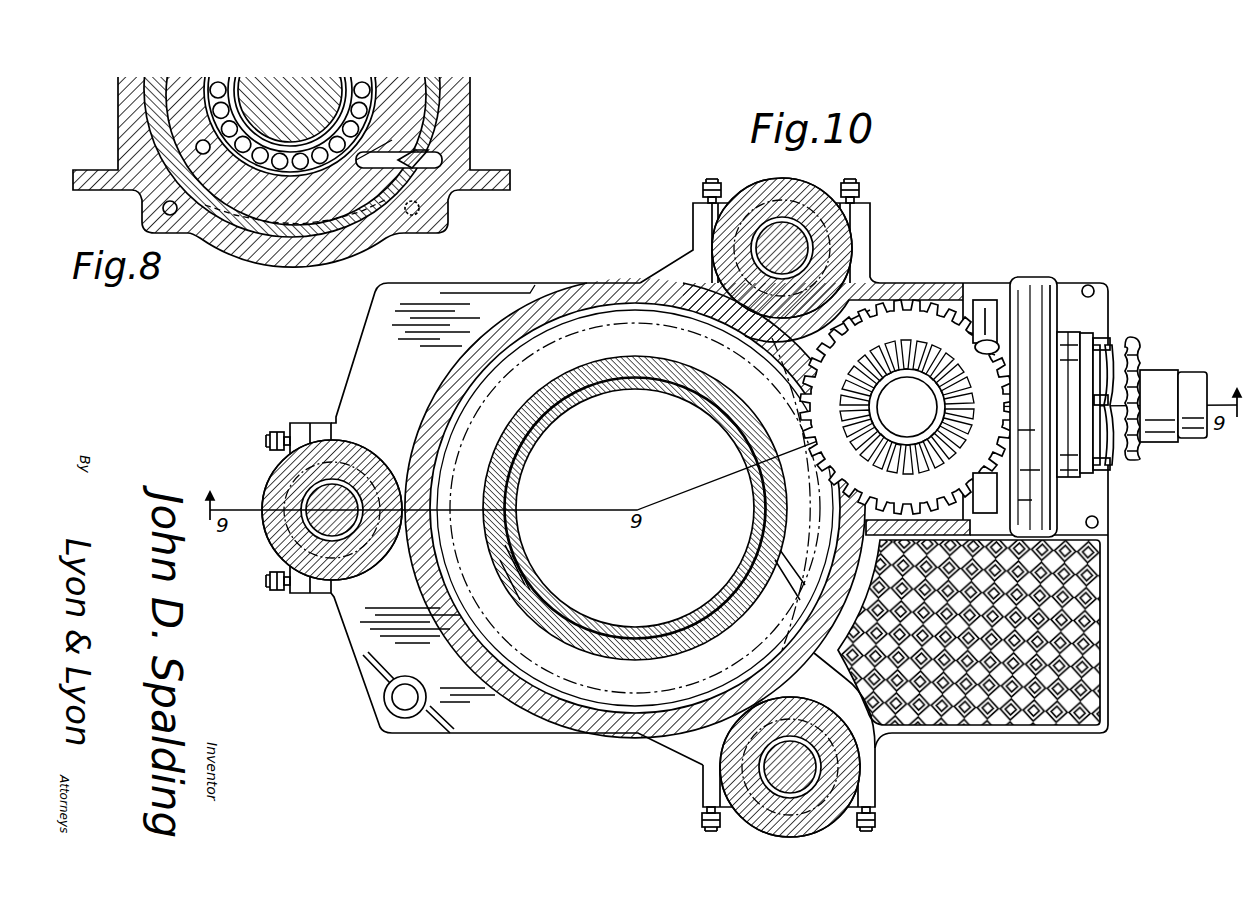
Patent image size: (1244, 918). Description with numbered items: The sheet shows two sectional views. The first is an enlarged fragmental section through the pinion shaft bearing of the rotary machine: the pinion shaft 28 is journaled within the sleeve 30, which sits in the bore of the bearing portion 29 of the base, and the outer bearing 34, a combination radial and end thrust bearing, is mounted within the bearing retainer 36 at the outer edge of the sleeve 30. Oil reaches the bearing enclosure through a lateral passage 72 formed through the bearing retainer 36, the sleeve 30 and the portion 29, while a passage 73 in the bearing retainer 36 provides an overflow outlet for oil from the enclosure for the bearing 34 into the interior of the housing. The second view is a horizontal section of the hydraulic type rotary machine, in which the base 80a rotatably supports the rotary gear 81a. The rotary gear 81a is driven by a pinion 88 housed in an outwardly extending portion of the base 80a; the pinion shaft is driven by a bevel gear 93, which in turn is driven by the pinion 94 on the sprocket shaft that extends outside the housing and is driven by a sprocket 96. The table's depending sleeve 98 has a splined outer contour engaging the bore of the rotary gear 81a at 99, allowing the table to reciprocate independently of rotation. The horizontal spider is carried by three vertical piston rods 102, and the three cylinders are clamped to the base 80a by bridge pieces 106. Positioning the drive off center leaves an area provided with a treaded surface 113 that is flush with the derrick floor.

In FIG. 8, the pinion shaft 28 is at (305, 88).
In FIG. 8, the bearing portion 29 is at (462, 105).
In FIG. 8, the sleeve 30 is at (434, 88).
In FIG. 8, the outer bearing 34 is at (364, 88).
In FIG. 8, the bearing retainer 36 is at (386, 95).
In FIG. 8, the lateral passage 72 is at (428, 152).
In FIG. 8, the passage 73 is at (396, 168).
In FIG. 10, the base 80a is at (774, 192).
In FIG. 10, the rotary gear 81a is at (793, 405).
In FIG. 10, the pinion 88 is at (822, 483).
In FIG. 10, the bevel gear 93 is at (907, 420).
In FIG. 10, the pinion 94 is at (962, 400).
In FIG. 10, the sprocket 96 is at (1138, 362).
In FIG. 10, the depending sleeve 98 is at (742, 425).
In FIG. 10, the spline 99 is at (536, 580).
In FIG. 10, the vertical piston rods 102 is at (786, 240).
In FIG. 10, the bridge pieces 106 is at (818, 195).
In FIG. 10, the treaded surface 113 is at (1082, 726).